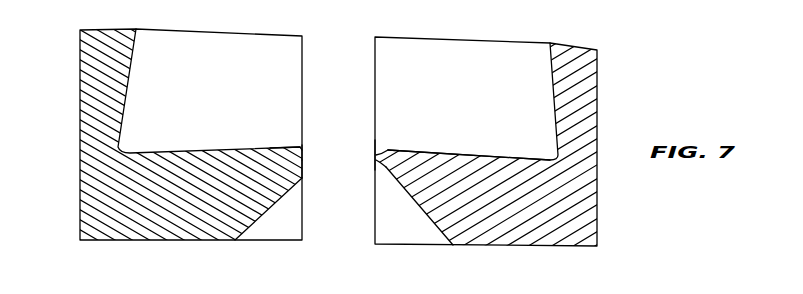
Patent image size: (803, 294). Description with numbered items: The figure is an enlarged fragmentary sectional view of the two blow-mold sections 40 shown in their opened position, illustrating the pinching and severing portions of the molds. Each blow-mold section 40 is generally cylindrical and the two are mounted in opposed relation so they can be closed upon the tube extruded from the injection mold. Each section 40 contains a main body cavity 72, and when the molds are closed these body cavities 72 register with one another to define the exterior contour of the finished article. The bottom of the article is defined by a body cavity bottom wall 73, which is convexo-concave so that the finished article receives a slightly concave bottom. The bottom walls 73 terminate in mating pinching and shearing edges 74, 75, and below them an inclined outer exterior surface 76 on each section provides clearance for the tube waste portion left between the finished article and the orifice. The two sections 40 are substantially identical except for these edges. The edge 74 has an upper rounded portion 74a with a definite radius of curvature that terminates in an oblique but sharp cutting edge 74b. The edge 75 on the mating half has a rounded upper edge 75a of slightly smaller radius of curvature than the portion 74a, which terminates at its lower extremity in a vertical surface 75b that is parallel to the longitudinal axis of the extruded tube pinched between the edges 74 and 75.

The blow-mold section 40 is at (62, 93).
The body cavity 72 is at (128, 82).
The body cavity bottom wall 73 is at (456, 152).
The pinching and shearing edge 74 is at (374, 143).
The upper rounded portion 74a is at (398, 150).
The oblique sharp cutting edge 74b is at (388, 176).
The pinching and shearing edge 75 is at (305, 154).
The rounded upper edge 75a is at (298, 148).
The vertical surface 75b is at (303, 166).
The inclined outer exterior surface 76 is at (268, 213).